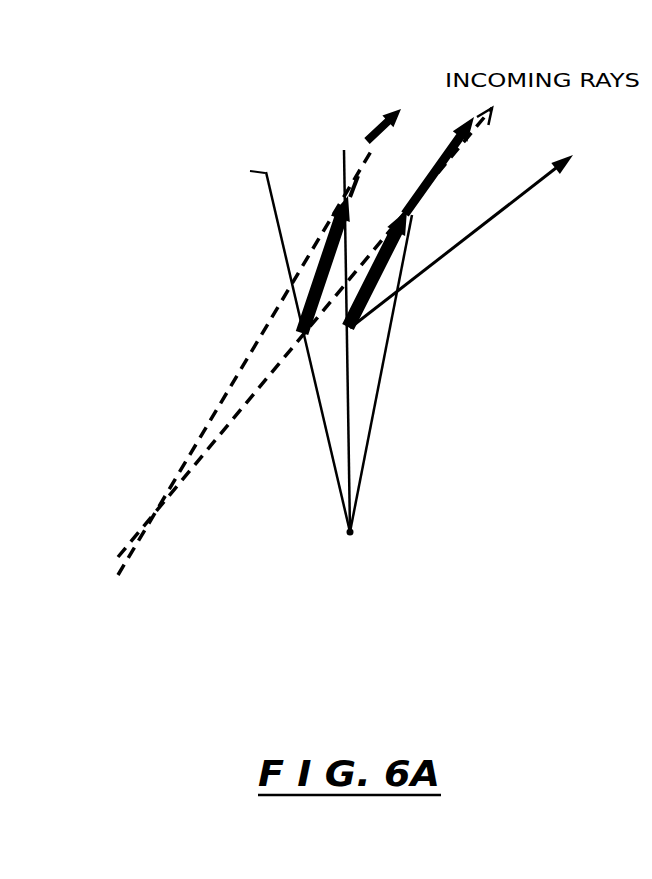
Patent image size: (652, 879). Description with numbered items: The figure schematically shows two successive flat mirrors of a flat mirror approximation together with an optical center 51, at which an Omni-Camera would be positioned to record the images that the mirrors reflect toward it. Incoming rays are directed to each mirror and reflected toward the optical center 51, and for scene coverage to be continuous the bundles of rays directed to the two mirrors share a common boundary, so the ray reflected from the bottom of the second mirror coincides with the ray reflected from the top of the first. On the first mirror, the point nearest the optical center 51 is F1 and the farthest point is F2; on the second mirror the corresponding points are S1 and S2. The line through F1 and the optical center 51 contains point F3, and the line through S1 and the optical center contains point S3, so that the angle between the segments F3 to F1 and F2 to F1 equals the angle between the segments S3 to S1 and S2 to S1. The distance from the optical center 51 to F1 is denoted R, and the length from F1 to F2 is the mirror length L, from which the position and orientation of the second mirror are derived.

The optical center 51 is at (354, 532).
The point S1 is at (302, 333).
The point S2 is at (340, 200).
The point S3 is at (246, 171).
The point F1 is at (346, 321).
The point F2 is at (396, 215).
The point F3 is at (344, 151).